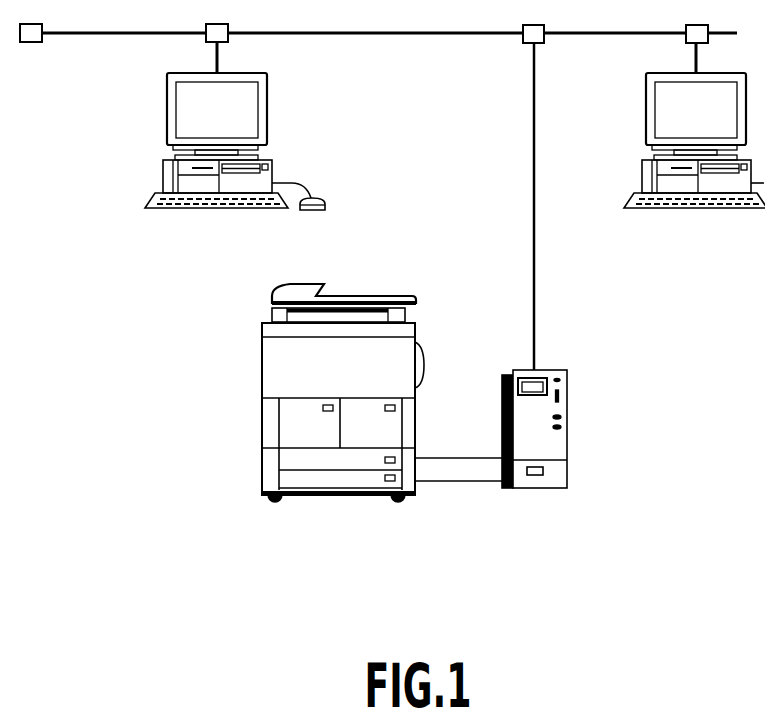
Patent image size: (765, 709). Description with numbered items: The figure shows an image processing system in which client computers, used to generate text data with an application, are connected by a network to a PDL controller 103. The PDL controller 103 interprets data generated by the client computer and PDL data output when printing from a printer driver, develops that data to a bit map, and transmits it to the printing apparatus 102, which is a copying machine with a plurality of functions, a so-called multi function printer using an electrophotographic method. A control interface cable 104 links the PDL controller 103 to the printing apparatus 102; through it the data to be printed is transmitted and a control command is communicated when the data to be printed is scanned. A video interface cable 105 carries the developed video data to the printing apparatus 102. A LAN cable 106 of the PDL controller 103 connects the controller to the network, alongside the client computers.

The printing apparatus 102 is at (339, 497).
The PDL controller 103 is at (533, 490).
The control interface cable 104 is at (457, 456).
The video interface cable 105 is at (452, 483).
The LAN cable 106 is at (534, 200).